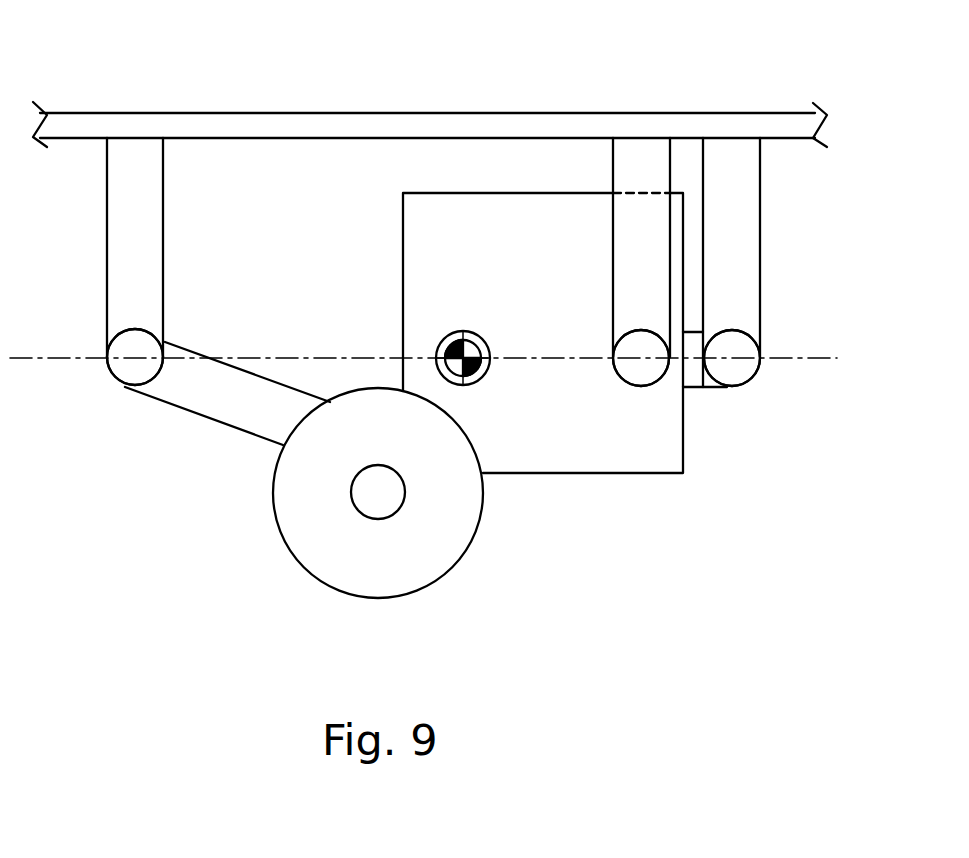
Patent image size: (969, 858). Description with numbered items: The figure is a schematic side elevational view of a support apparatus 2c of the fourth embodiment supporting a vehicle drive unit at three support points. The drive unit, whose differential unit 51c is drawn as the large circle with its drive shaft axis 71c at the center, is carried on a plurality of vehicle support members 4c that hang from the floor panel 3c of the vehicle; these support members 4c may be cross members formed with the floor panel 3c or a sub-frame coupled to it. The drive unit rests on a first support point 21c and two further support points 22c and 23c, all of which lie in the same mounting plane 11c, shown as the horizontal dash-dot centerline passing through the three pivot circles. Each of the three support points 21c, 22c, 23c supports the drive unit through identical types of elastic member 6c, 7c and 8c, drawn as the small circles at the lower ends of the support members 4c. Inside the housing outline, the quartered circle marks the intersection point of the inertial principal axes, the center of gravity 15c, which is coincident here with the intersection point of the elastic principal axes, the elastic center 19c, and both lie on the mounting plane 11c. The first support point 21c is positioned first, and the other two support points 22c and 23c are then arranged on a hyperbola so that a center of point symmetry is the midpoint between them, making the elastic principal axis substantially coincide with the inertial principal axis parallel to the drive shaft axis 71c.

The support apparatus 2c is at (163, 483).
The floor panel 3c is at (210, 112).
The vehicle support members 4c is at (163, 225).
The elastic member 6c is at (727, 388).
The elastic member 7c is at (645, 384).
The elastic member 8c is at (105, 357).
The mounting plane 11c is at (797, 356).
The center of gravity 15c is at (463, 331).
The elastic center 19c is at (470, 383).
The first support point 21c is at (732, 357).
The support point 22c is at (641, 358).
The support point 23c is at (134, 358).
The differential unit 51c is at (274, 492).
The drive shaft axis 71c is at (378, 492).